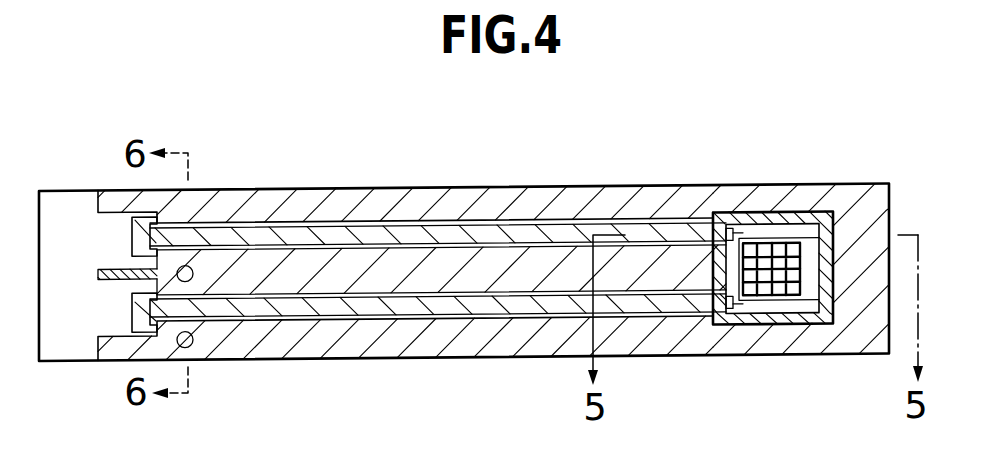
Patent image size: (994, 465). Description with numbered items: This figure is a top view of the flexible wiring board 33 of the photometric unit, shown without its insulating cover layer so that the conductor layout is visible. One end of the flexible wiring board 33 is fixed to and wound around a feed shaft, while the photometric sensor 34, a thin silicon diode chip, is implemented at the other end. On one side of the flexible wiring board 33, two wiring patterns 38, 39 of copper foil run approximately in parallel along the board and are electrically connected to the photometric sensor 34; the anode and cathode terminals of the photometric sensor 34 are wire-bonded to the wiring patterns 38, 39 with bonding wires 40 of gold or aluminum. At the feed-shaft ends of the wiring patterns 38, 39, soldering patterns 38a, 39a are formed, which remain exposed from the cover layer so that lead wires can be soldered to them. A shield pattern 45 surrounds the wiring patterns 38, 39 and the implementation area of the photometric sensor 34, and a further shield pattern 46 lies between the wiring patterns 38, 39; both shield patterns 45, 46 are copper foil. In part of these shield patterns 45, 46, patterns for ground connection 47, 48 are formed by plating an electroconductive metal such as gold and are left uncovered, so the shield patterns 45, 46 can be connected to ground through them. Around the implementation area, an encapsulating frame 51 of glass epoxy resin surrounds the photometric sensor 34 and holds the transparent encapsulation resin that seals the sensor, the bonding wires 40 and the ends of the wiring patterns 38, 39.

The flexible wiring board 33 is at (436, 184).
The photometric sensor 34 is at (795, 243).
The wiring pattern 38 is at (344, 312).
The soldering pattern 38a is at (139, 320).
The wiring pattern 39 is at (357, 236).
The soldering pattern 39a is at (138, 226).
The bonding wires 40 is at (750, 244).
The shield pattern 45 is at (287, 218).
The shield pattern 46 is at (503, 269).
The pattern for ground connection 47 is at (191, 347).
The pattern for ground connection 48 is at (189, 266).
The encapsulating frame 51 is at (792, 321).